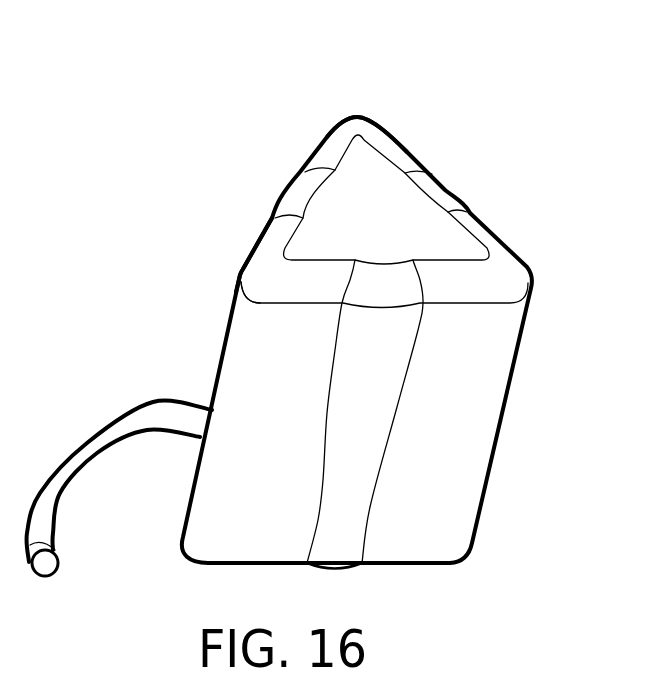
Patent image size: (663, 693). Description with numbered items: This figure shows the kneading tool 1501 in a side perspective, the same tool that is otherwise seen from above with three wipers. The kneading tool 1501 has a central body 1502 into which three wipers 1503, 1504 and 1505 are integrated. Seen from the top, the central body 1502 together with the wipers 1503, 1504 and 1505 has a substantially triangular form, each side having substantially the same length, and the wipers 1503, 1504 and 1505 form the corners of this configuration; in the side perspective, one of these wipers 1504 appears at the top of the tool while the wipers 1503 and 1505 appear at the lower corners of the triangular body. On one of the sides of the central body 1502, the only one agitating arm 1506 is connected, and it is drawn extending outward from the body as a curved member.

The kneading tool 1501 is at (177, 140).
The central body 1502 is at (406, 200).
The wiper 1503 is at (515, 267).
The wiper 1504 is at (357, 123).
The wiper 1505 is at (252, 280).
The agitating arm 1506 is at (88, 433).